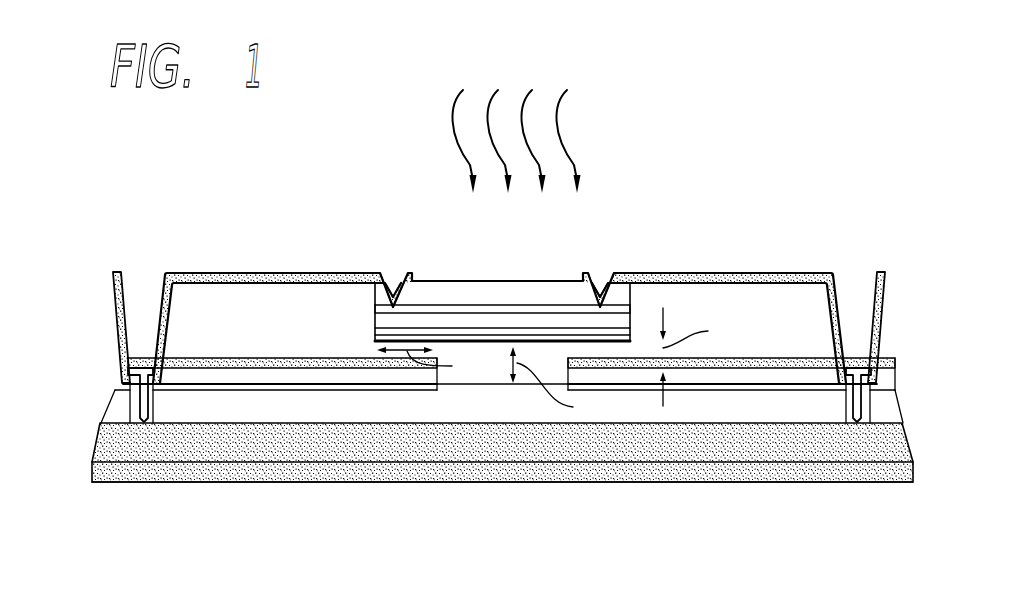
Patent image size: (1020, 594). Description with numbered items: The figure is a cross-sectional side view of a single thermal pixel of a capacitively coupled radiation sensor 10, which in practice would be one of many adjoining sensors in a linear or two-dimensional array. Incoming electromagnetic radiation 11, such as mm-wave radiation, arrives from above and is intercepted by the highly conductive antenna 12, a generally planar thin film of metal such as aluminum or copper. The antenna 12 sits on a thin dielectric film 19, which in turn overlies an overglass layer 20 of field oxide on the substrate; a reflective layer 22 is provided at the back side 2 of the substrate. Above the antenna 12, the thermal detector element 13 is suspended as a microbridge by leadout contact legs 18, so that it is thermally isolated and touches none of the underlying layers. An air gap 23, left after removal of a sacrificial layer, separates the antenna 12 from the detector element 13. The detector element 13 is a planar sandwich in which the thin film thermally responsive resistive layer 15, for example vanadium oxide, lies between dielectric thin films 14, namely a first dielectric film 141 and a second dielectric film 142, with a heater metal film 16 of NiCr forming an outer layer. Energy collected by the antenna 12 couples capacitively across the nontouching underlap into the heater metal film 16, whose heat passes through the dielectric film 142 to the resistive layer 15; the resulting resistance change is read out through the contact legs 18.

The back side of substrate 2 is at (730, 485).
The capacitively coupled radiation sensor 10 is at (682, 185).
The electromagnetic radiation 11 is at (543, 87).
The antenna 12 is at (258, 357).
The thermal detector element 13 is at (576, 277).
The dielectric thin films 14 is at (465, 274).
The first dielectric thin film 141 is at (475, 293).
The second dielectric thin film 142 is at (509, 325).
The thermally responsive resistive layer 15 is at (375, 308).
The heater metal film 16 is at (418, 330).
The leadout contact legs 18 is at (117, 313).
The thin dielectric film 19 is at (262, 377).
The overglass layer 20 is at (492, 413).
The reflective layer 22 is at (287, 483).
The air gap 23 is at (777, 293).